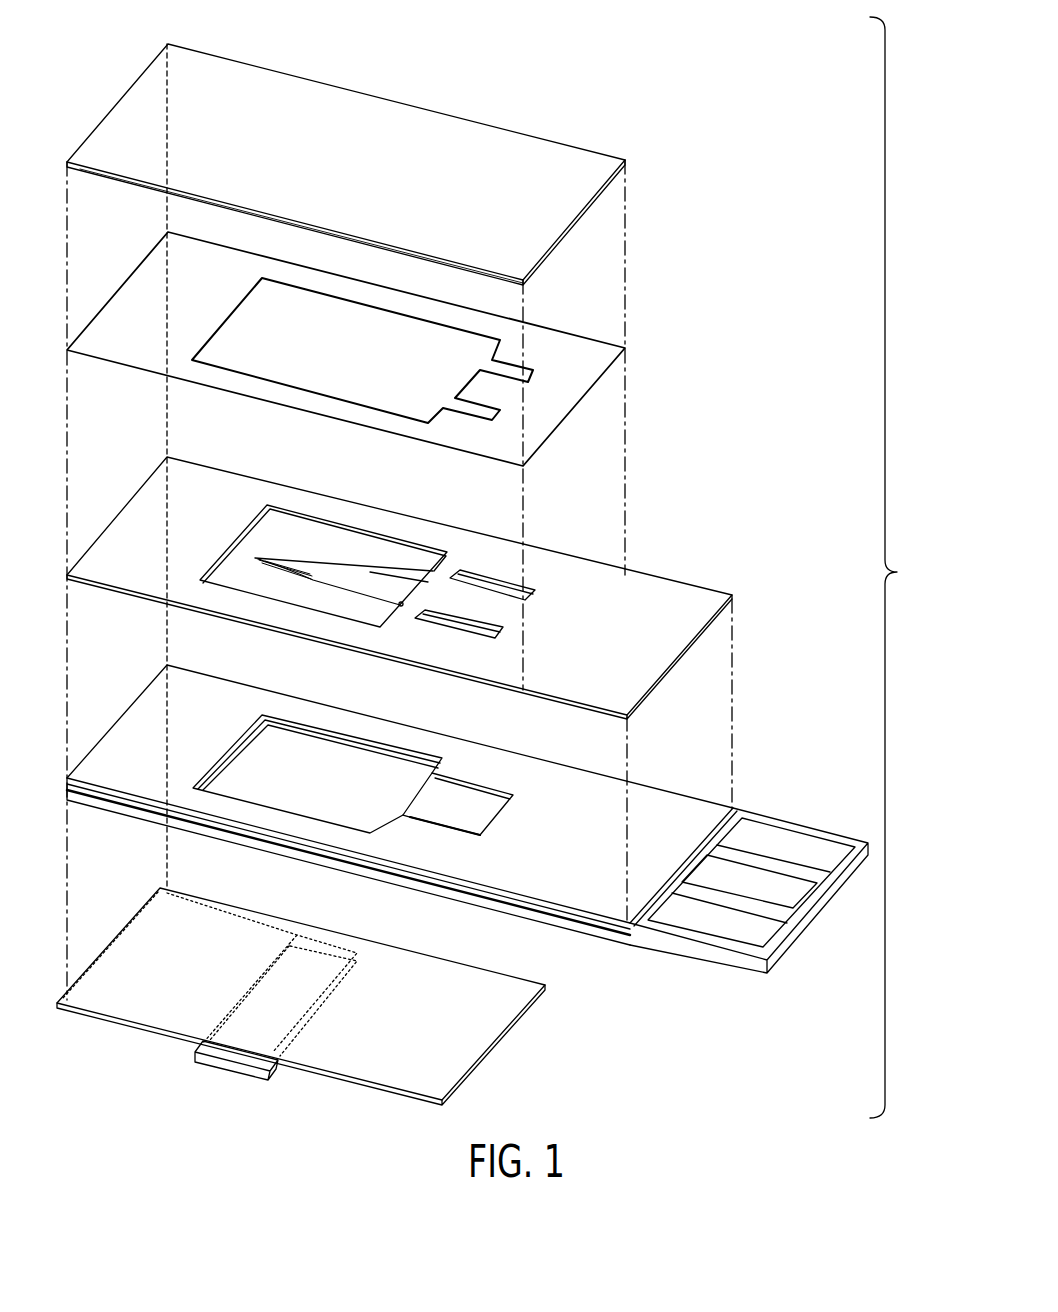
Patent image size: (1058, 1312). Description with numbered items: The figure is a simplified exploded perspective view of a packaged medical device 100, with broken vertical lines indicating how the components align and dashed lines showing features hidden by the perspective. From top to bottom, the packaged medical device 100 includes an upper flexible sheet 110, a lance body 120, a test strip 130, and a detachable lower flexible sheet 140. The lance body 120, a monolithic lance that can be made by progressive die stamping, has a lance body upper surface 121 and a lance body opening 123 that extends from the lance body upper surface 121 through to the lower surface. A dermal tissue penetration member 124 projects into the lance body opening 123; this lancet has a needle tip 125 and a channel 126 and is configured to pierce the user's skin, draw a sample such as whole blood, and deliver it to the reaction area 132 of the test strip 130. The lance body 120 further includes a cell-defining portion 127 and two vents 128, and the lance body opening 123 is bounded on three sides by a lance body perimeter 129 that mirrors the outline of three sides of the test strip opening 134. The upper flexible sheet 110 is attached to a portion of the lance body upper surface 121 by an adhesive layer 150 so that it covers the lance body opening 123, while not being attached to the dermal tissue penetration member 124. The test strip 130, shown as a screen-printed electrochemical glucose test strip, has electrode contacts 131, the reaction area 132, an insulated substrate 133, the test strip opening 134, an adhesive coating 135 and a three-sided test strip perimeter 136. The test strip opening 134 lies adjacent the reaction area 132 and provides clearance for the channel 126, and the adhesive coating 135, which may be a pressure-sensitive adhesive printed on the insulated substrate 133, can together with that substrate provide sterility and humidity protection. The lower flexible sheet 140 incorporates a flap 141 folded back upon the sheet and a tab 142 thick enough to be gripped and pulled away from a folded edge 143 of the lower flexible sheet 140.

The packaged medical device 100 is at (910, 567).
The upper flexible sheet 110 is at (598, 220).
The adhesive layer 150 is at (600, 412).
The lance body 120 is at (416, 561).
The lance body upper surface 121 is at (637, 592).
The lance body opening 123 is at (278, 583).
The dermal tissue penetration member 124 is at (322, 615).
The needle tip 125 is at (297, 557).
The channel 126 is at (350, 580).
The cell-defining portion 127 is at (475, 605).
The vents 128 is at (480, 627).
The lance body perimeter 129 is at (293, 503).
The test strip 130 is at (467, 807).
The electrode contacts 131 is at (793, 848).
The reaction area 132 is at (447, 810).
The insulated substrate 133 is at (680, 945).
The test strip opening 134 is at (278, 788).
The adhesive coating 135 is at (548, 850).
The three-sided test strip perimeter 136 is at (287, 710).
The lower flexible sheet 140 is at (322, 997).
The flap 141 is at (158, 1040).
The tab 142 is at (237, 1070).
The folded edge 143 is at (137, 920).